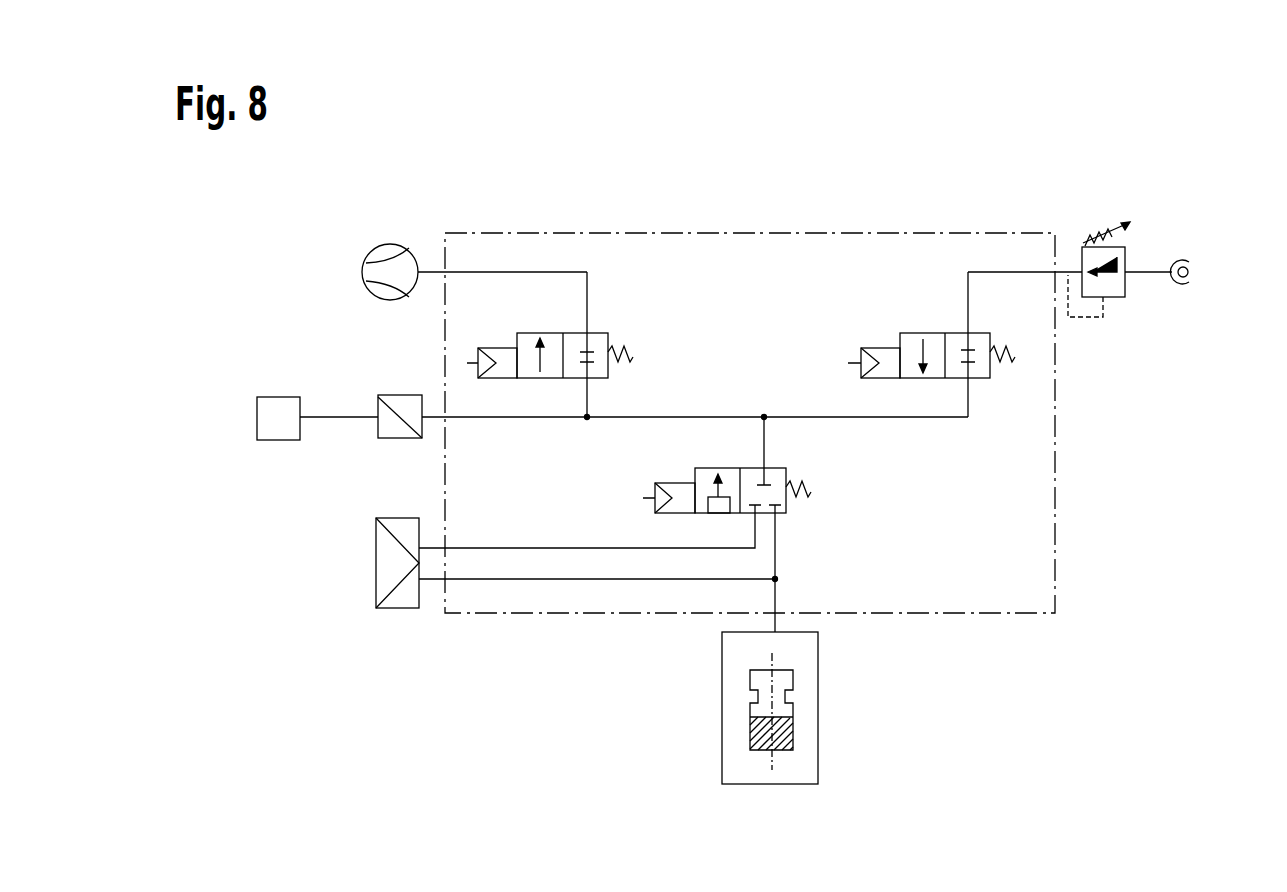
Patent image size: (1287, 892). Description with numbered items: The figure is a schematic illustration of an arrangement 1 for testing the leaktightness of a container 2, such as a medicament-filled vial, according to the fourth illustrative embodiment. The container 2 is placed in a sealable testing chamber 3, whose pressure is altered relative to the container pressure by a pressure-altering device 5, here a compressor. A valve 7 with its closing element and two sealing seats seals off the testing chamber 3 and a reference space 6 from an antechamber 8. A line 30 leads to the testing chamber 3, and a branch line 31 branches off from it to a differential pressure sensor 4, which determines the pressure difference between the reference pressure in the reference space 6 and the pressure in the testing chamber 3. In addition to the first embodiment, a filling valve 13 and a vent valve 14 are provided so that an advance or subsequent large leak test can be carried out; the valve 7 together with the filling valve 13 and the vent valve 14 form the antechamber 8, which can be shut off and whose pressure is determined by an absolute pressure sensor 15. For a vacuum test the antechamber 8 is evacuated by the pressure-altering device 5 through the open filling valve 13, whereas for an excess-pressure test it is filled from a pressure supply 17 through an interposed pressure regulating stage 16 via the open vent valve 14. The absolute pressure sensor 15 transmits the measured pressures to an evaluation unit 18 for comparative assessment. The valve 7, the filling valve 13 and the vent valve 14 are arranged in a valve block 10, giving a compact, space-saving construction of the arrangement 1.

The arrangement 1 is at (1028, 660).
The container 2 is at (787, 727).
The testing chamber 3 is at (803, 657).
The differential pressure sensor 4 is at (405, 598).
The pressure-altering device 5 is at (383, 252).
The reference space 6 is at (570, 548).
The valve 7 is at (778, 477).
The antechamber 8 is at (677, 398).
The valve block 10 is at (1055, 515).
The filling valve 13 is at (605, 336).
The vent valve 14 is at (915, 340).
The absolute pressure sensor 15 is at (405, 402).
The pressure regulating stage 16 is at (1120, 285).
The pressure supply 17 is at (1187, 262).
The evaluation unit 18 is at (278, 402).
The line 30 is at (775, 547).
The branch line 31 is at (650, 582).